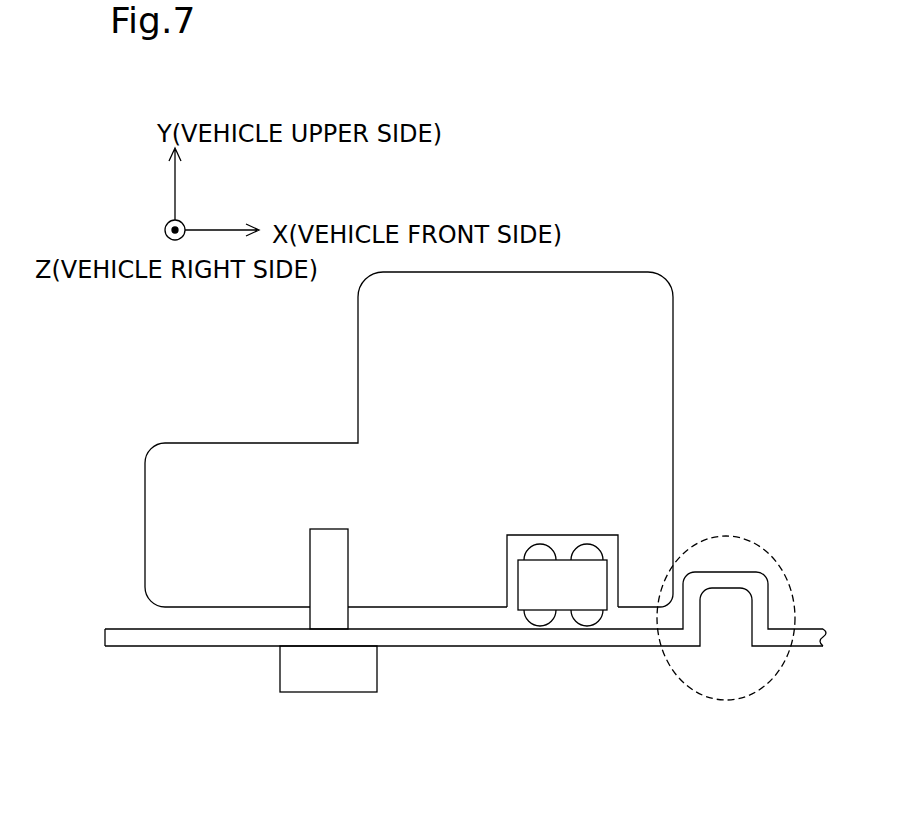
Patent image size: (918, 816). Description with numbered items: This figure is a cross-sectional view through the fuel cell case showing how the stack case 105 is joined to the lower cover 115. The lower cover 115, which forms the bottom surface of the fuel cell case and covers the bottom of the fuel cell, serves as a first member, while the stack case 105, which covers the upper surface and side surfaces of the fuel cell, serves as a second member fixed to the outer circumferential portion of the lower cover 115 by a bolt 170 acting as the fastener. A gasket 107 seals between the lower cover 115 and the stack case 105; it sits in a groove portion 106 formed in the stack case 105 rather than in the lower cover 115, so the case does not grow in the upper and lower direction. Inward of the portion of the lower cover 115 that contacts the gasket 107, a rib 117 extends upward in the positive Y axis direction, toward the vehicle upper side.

The stack case 105 is at (218, 450).
The groove portion 106 is at (620, 548).
The gasket 107 is at (562, 600).
The lower cover 115 is at (223, 637).
The rib 117 is at (696, 689).
The bolt 170 is at (333, 683).